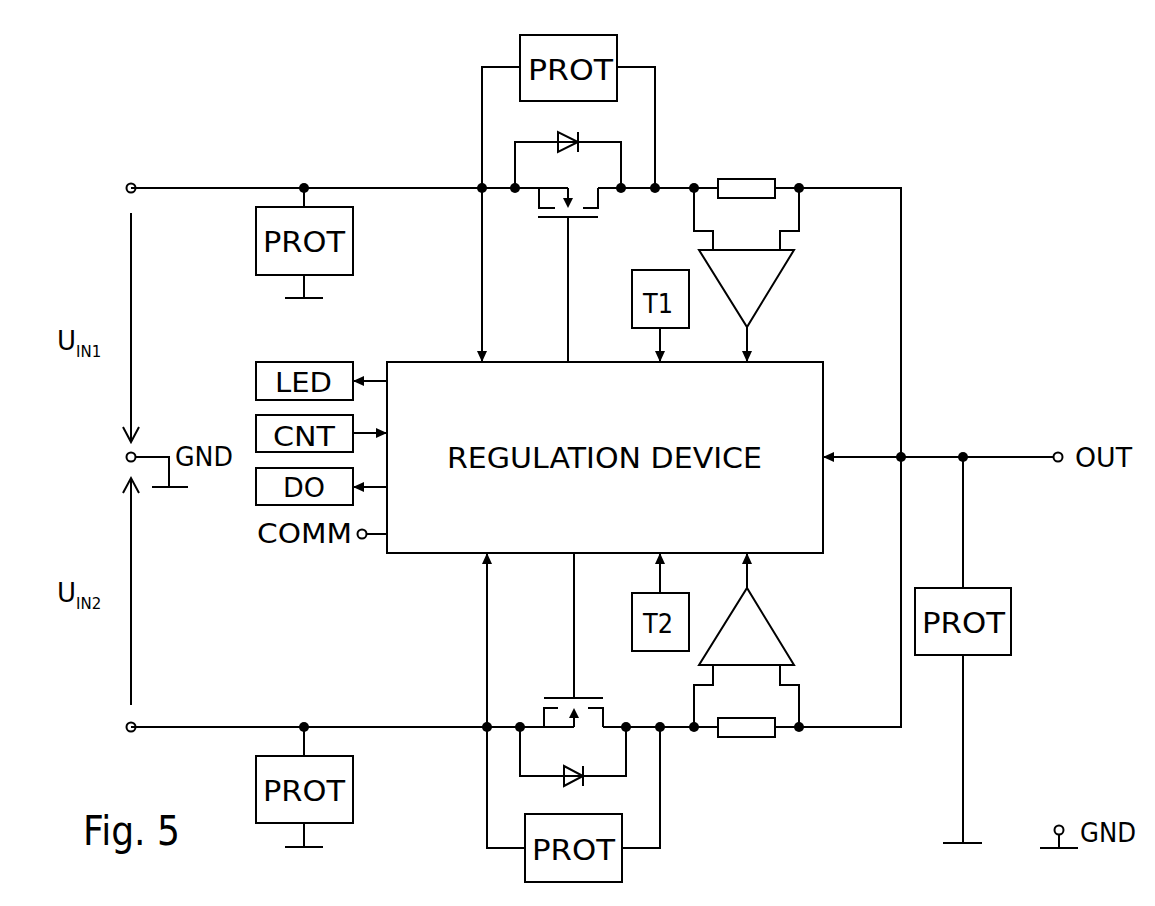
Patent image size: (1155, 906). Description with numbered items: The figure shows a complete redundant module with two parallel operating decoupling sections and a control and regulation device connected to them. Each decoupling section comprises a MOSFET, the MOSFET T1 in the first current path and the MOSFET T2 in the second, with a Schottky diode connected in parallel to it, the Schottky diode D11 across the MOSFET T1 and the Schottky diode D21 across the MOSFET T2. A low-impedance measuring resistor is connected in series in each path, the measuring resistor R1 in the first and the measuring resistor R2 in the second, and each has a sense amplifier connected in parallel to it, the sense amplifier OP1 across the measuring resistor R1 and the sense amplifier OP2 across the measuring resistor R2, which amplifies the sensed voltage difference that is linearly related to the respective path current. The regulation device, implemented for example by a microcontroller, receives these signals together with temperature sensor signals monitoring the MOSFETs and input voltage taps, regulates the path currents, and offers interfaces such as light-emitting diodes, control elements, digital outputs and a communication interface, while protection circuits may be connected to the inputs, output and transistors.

The Schottky diode D11 is at (568, 146).
The MOSFET T1 is at (568, 260).
The Schottky diode D21 is at (573, 770).
The MOSFET T2 is at (573, 657).
The measuring resistor R1 is at (746, 175).
The measuring resistor R2 is at (746, 743).
The sense amplifier OP1 is at (774, 275).
The sense amplifier OP2 is at (774, 640).